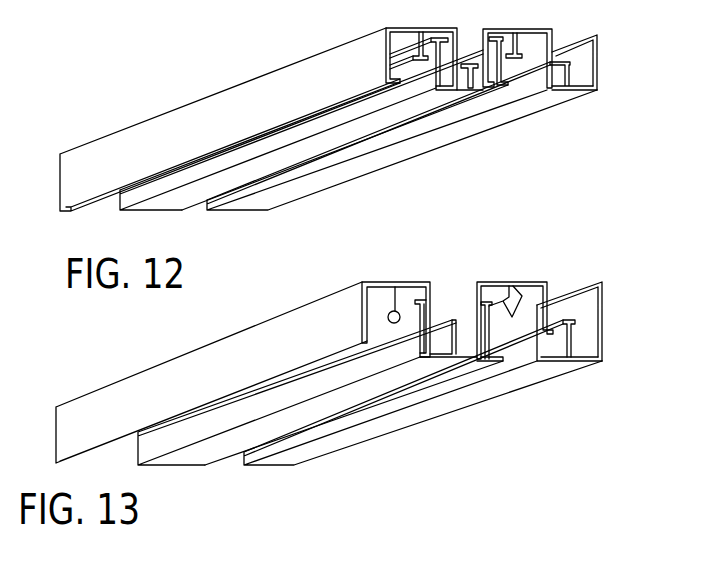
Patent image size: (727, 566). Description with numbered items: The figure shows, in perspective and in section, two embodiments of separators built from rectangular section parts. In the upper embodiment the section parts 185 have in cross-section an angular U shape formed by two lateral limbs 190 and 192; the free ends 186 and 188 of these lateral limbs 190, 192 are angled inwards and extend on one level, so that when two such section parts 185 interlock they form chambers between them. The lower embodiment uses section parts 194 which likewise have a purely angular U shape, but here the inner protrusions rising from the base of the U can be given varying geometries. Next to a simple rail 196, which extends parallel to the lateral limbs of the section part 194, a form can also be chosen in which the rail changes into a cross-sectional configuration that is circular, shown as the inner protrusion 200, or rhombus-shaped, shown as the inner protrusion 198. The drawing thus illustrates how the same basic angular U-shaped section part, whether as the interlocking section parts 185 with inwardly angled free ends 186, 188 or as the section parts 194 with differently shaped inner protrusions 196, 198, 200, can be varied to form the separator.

In FIG. 12, the section parts 185 is at (597, 90).
In FIG. 12, the free end 186 is at (490, 37).
In FIG. 12, the free end 188 is at (437, 38).
In FIG. 12, the lateral limb 190 is at (598, 63).
In FIG. 12, the lateral limb 192 is at (527, 75).
In FIG. 13, the section parts 194 is at (602, 340).
In FIG. 13, the rail 196 is at (570, 318).
In FIG. 13, the inner protrusion 198 is at (522, 297).
In FIG. 13, the inner protrusion 200 is at (382, 305).